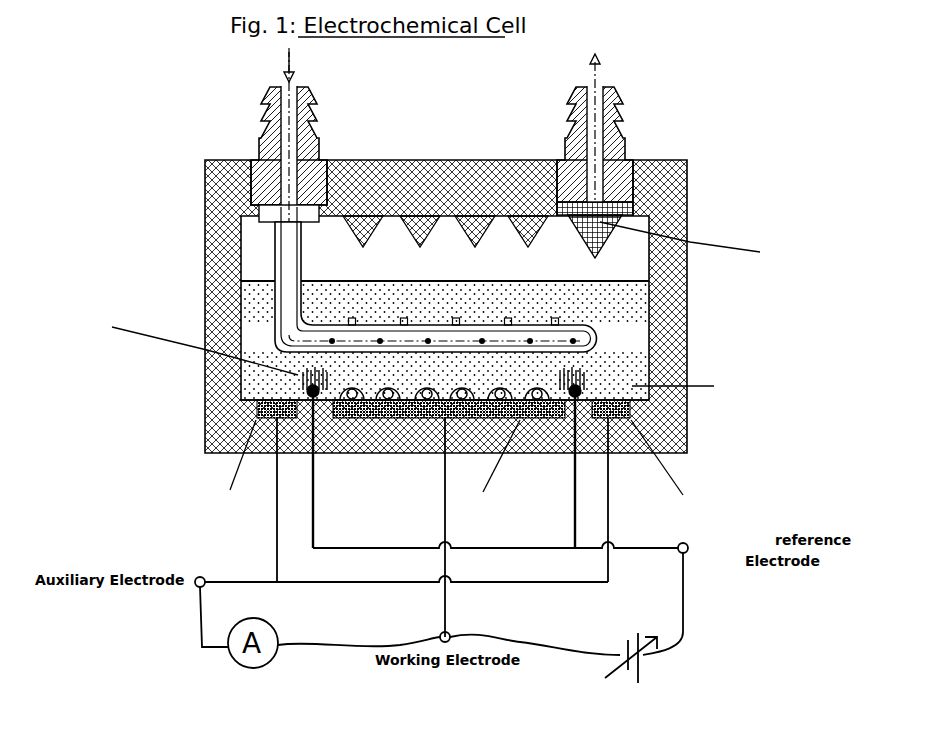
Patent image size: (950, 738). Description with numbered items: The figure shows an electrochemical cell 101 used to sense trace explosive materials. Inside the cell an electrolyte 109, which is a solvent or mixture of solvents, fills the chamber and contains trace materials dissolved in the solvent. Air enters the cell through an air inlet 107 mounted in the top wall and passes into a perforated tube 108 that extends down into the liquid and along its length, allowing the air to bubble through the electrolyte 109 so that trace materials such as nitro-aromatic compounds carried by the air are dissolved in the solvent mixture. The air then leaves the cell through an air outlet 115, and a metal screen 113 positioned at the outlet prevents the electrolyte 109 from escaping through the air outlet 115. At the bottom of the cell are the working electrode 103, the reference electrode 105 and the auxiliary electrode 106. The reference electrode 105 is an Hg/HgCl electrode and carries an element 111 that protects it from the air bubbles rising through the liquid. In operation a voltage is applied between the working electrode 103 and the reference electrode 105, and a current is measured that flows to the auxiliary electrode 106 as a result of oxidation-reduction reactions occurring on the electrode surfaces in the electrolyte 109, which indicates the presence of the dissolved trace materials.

The electrochemical cell 101 is at (205, 268).
The working electrode 103 is at (390, 420).
The reference electrode 105 is at (310, 384).
The auxiliary electrode 106 is at (257, 410).
The air inlet 107 is at (262, 122).
The perforated tube 108 is at (535, 322).
The electrolyte 109 is at (627, 320).
The element 111 is at (295, 362).
The metal screen 113 is at (600, 230).
The air outlet 115 is at (633, 128).